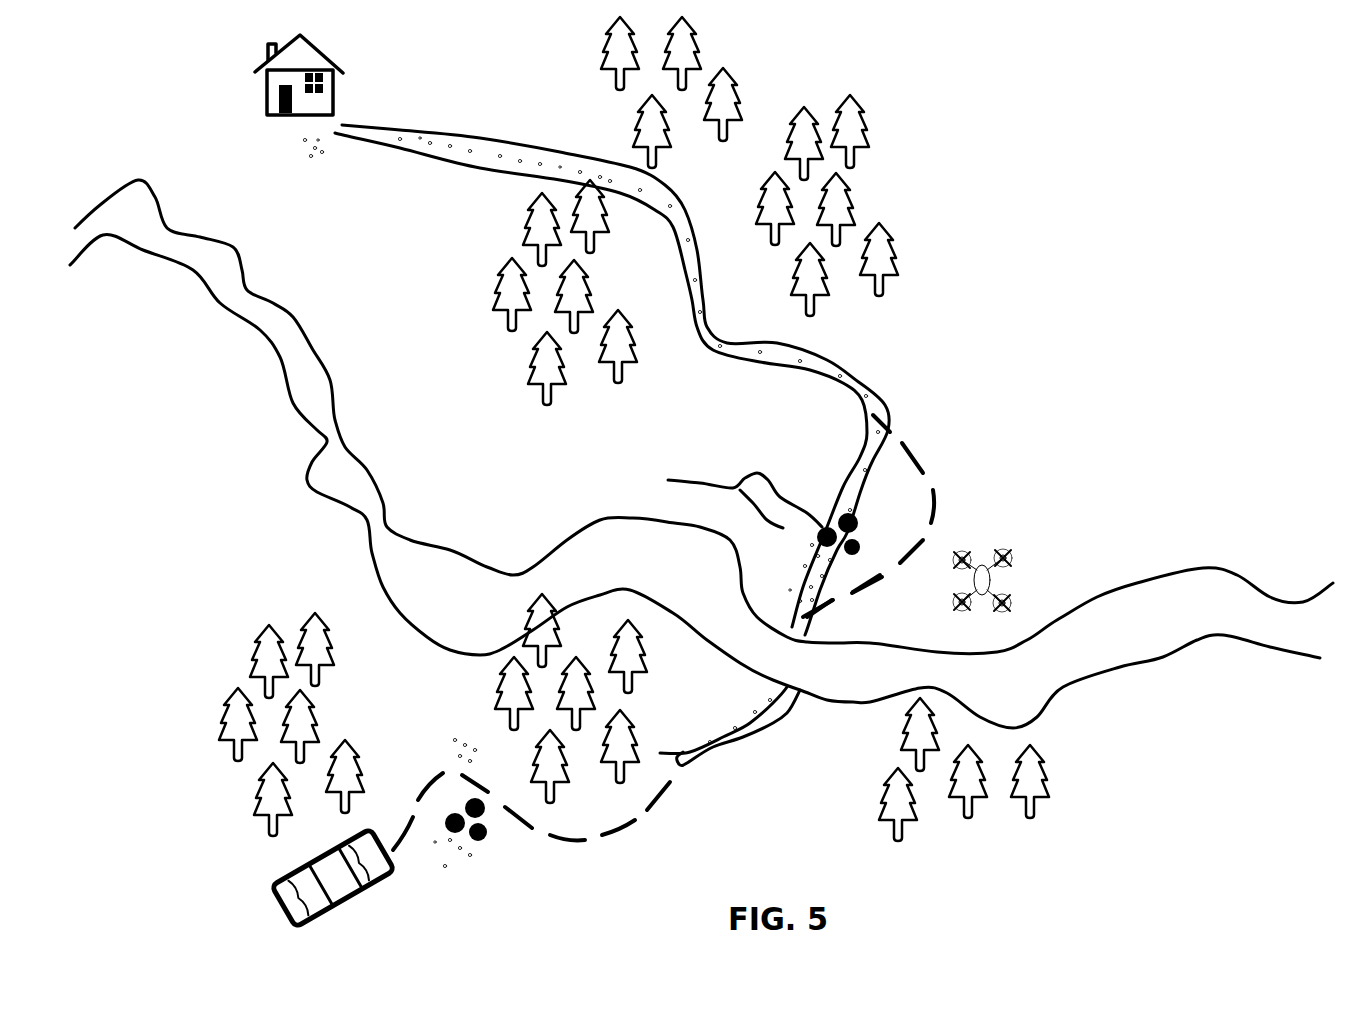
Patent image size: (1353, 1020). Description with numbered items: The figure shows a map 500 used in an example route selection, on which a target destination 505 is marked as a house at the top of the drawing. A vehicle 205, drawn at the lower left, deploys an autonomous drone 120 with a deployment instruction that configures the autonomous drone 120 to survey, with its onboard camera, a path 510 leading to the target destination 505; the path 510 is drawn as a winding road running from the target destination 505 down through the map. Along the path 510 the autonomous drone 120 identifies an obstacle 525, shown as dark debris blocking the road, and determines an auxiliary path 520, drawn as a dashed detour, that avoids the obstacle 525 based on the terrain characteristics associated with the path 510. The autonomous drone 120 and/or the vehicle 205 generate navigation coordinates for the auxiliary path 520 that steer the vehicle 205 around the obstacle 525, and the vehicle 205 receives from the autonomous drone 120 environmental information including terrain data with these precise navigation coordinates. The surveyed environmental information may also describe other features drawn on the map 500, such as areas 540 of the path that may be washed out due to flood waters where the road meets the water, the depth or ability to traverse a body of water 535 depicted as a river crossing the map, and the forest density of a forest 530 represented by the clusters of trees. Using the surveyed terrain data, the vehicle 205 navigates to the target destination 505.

The map 500 is at (1199, 150).
The target destination 505 is at (342, 72).
The path 510 is at (710, 747).
The auxiliary path 520 is at (927, 475).
The obstacle 525 is at (860, 540).
The forest 530 is at (900, 265).
The body of water 535 is at (288, 342).
The areas of the path 540 is at (815, 673).
The autonomous drone 120 is at (1007, 567).
The vehicle 205 is at (302, 910).